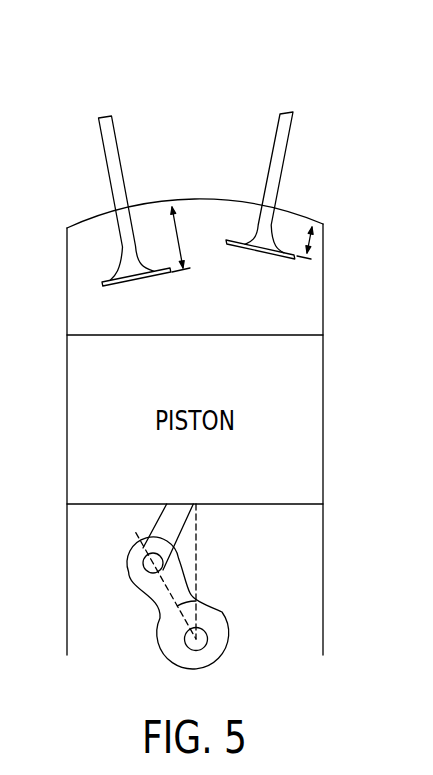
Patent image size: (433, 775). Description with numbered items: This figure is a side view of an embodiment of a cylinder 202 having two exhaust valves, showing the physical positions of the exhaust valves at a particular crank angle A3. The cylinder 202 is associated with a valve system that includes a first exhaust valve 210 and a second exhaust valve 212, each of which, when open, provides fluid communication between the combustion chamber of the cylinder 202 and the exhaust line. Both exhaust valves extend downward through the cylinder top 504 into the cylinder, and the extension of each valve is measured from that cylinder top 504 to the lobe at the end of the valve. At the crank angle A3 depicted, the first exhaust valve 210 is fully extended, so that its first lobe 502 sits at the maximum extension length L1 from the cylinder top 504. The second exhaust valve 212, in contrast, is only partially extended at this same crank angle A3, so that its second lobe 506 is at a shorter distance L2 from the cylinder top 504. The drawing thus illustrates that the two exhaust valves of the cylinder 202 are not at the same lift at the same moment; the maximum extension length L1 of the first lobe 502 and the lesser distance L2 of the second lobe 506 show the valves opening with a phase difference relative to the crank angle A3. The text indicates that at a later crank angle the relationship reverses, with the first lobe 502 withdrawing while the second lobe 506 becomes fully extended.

The cylinder 202 is at (323, 297).
The first exhaust valve 210 is at (110, 173).
The second exhaust valve 212 is at (282, 152).
The first lobe 502 is at (137, 270).
The cylinder top 504 is at (181, 203).
The second lobe 506 is at (252, 240).
The maximum extension length L1 is at (178, 228).
The distance L2 is at (316, 240).
The crank angle A3 is at (172, 600).